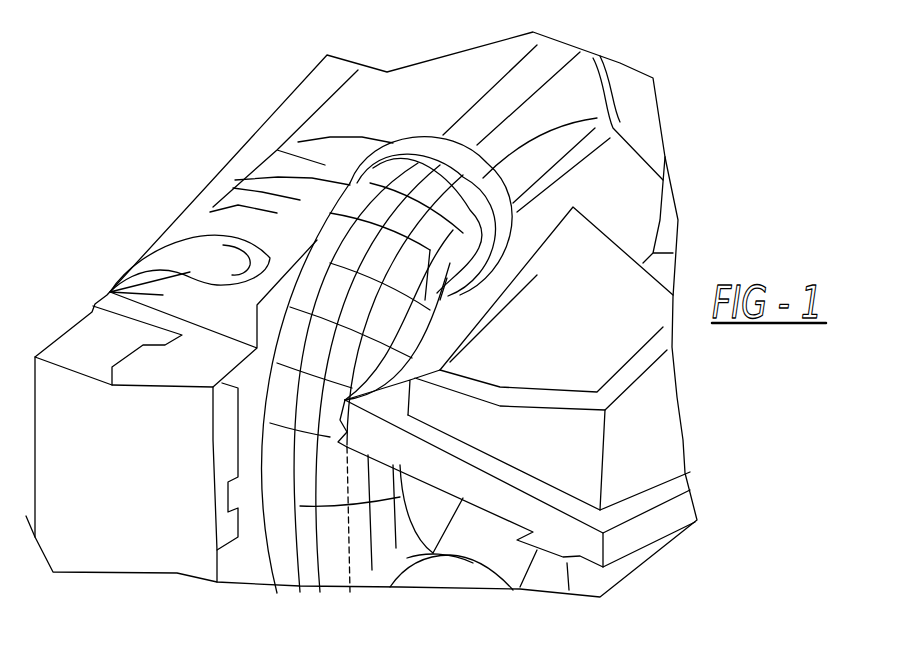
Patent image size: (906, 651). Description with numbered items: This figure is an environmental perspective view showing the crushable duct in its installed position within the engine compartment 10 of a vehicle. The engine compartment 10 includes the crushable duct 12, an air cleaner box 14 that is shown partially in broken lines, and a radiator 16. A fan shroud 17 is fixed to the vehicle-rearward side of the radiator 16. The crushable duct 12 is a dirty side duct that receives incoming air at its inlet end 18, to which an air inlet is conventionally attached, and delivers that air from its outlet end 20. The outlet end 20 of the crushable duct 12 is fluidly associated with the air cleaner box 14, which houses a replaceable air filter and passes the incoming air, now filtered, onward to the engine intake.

The component body 10 is at (125, 183).
The ribbed curved surface 12 is at (323, 537).
The raised block 14 is at (657, 423).
The annular boss 16 is at (266, 162).
The side wall 17 is at (618, 188).
The flange 18 is at (575, 130).
The lower protrusion 20 is at (453, 573).